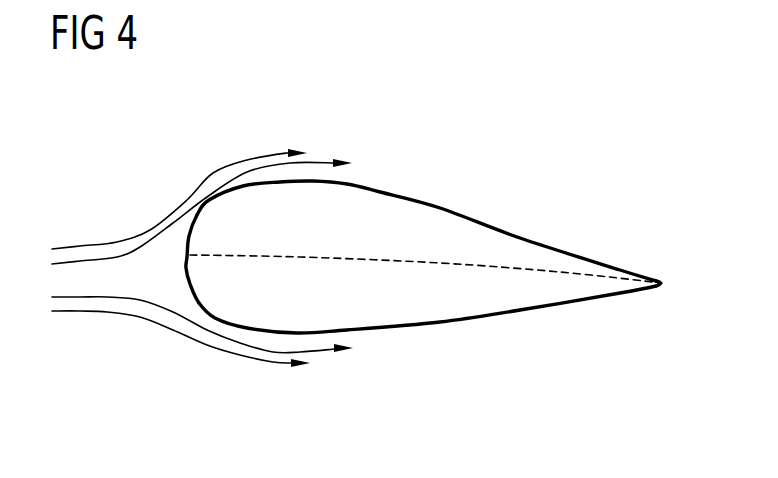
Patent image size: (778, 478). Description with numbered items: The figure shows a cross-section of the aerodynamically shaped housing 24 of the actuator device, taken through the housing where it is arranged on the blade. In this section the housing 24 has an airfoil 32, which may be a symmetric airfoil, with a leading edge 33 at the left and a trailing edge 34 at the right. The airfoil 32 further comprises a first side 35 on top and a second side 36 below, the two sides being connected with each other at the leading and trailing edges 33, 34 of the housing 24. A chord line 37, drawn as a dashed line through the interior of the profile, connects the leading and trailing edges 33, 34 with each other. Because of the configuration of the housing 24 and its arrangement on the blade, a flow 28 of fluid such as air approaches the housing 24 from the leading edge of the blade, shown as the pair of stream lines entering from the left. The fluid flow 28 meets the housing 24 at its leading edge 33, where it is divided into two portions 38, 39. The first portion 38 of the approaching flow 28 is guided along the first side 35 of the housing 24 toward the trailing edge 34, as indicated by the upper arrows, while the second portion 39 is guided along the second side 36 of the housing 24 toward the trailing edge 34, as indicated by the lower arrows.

The housing 24 is at (161, 121).
The first portion of the fluid flow 28 is at (110, 243).
The airfoil 32 is at (540, 306).
The leading edge 33 is at (194, 255).
The trailing edge 34 is at (667, 283).
The first side 35 is at (548, 240).
The second side 36 is at (468, 320).
The chord line 37 is at (602, 279).
The first portion of the approaching flow 38 is at (232, 175).
The second portion of the approaching flow 39 is at (248, 358).